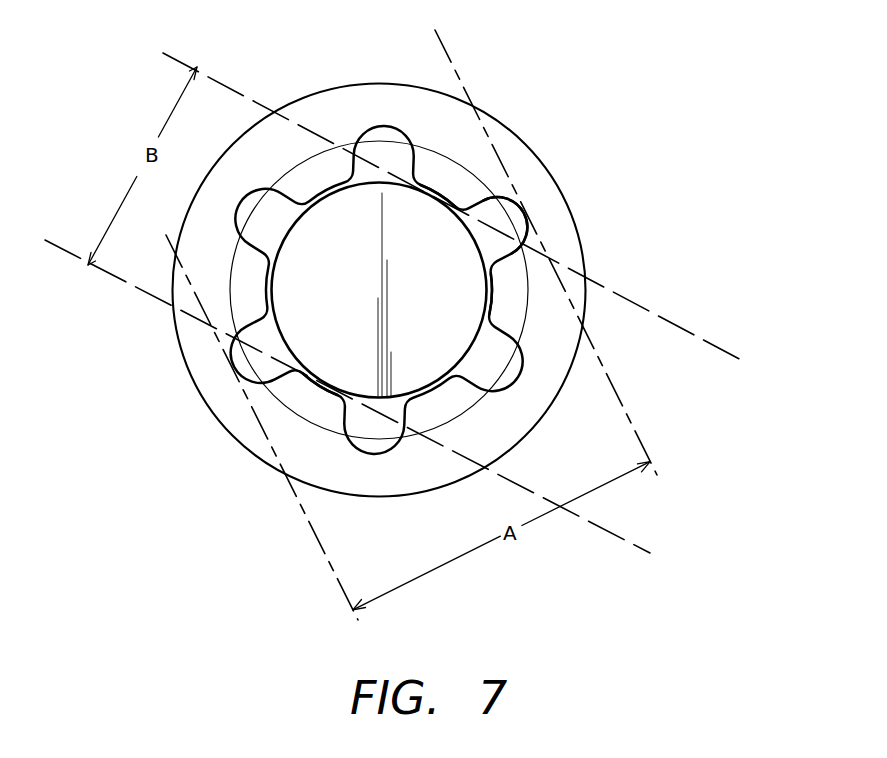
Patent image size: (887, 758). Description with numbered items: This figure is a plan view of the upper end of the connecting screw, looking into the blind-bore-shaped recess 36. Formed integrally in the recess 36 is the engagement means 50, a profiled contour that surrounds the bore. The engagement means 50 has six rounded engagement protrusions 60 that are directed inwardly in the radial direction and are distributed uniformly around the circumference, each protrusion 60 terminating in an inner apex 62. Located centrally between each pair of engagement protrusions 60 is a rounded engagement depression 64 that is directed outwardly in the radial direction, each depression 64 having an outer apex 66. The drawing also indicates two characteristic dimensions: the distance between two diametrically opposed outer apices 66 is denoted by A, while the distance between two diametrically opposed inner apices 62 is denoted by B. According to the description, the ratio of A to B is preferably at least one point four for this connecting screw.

The blind-bore-shaped recess 36 is at (409, 364).
The engagement means 50 is at (540, 381).
The engagement protrusions 60 is at (443, 172).
The inner apex 62 is at (320, 391).
The engagement depression 64 is at (250, 372).
The outer apex 66 is at (522, 210).